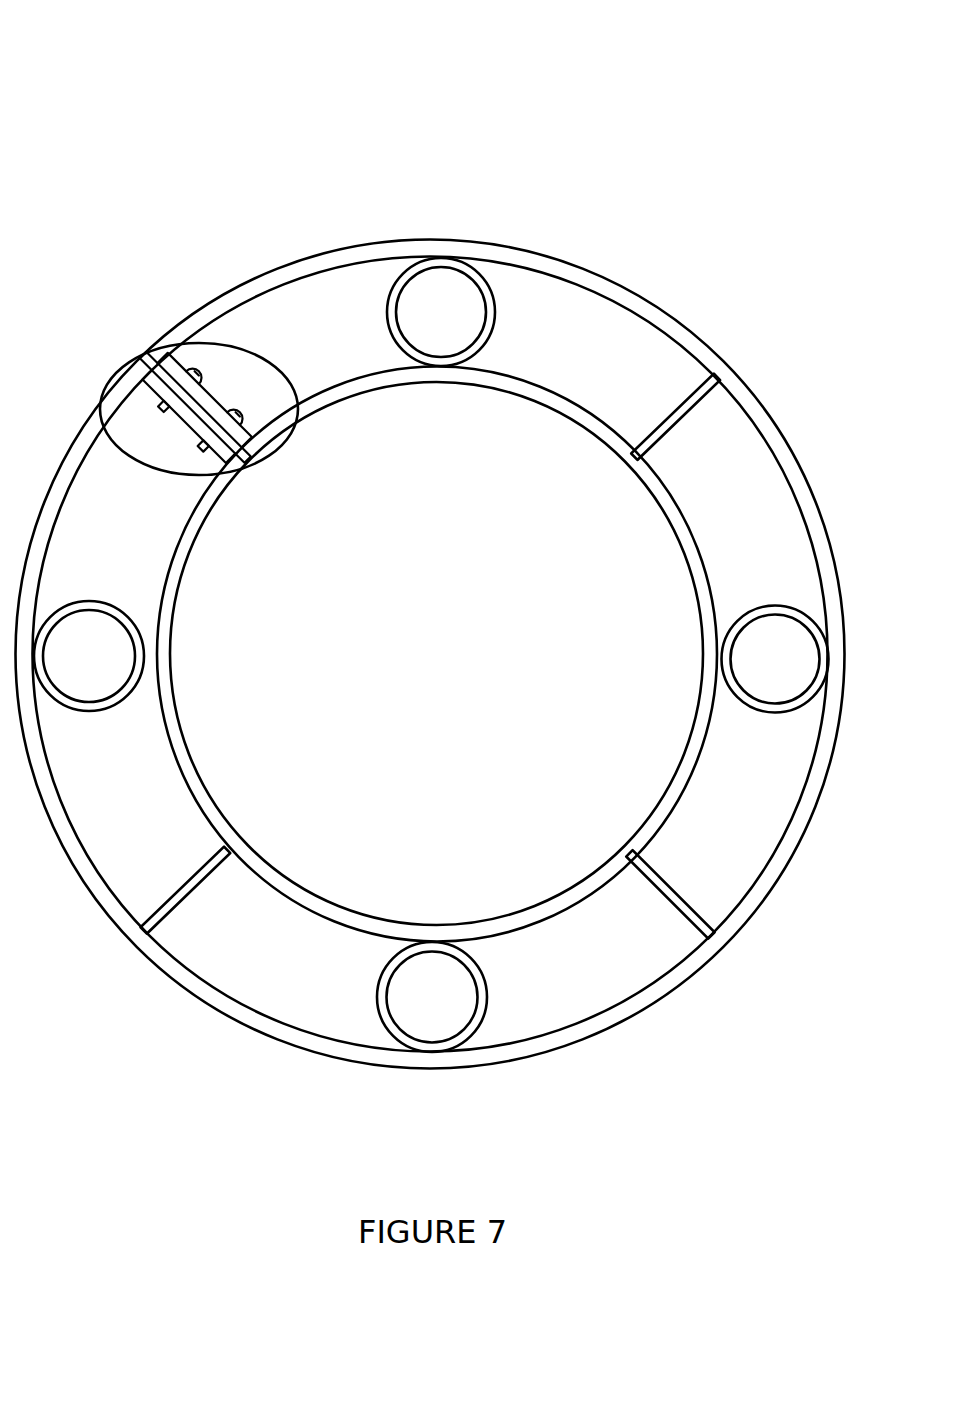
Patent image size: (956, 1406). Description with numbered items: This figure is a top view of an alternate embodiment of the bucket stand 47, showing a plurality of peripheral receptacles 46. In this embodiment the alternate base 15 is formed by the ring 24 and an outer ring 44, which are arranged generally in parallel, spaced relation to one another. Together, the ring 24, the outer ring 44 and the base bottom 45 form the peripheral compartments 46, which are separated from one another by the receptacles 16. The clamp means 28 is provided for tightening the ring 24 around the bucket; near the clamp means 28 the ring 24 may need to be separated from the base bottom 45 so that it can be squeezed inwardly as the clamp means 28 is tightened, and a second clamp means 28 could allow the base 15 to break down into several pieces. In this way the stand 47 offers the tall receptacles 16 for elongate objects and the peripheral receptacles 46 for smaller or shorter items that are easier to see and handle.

The bucket stand 47 is at (420, 178).
The alternate base 15 is at (540, 218).
The outer ring 44 is at (790, 857).
The ring 24 is at (680, 512).
The peripheral receptacles 46 is at (243, 987).
The receptacles 16 is at (105, 710).
The base bottom 45 is at (117, 505).
The clamp means 28 is at (280, 373).